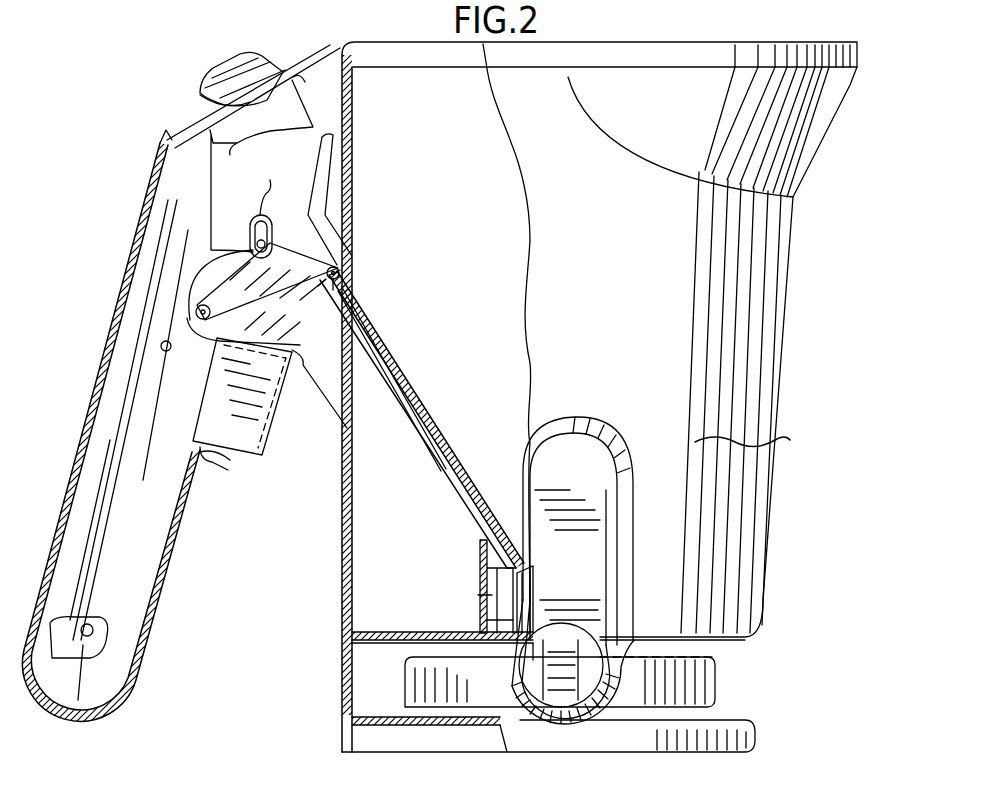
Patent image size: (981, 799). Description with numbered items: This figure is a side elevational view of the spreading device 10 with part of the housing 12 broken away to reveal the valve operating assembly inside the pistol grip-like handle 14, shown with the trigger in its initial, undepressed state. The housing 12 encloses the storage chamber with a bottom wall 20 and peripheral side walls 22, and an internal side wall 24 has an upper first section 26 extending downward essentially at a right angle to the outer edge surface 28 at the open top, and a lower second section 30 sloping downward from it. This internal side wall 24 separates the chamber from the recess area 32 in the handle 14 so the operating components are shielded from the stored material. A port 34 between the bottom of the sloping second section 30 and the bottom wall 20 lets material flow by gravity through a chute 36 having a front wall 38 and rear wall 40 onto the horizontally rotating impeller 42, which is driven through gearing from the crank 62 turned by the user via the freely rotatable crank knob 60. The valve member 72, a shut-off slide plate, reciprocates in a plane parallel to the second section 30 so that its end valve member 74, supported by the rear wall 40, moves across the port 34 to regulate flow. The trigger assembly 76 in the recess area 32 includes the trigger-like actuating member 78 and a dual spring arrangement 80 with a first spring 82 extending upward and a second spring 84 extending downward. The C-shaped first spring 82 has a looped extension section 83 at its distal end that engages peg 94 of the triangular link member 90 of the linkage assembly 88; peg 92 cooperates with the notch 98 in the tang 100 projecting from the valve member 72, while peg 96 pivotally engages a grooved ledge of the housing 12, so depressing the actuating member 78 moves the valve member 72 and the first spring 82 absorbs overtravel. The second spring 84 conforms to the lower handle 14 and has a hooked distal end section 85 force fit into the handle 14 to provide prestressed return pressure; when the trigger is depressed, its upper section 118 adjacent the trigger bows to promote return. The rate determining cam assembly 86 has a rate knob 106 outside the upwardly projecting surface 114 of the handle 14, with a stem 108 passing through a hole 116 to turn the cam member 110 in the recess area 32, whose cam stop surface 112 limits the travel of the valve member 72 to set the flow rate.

The spreading device 10 is at (296, 668).
The housing 12 is at (790, 364).
The handle 14 is at (105, 420).
The bottom wall 20 is at (535, 562).
The peripheral side walls 22 is at (753, 437).
The internal side wall 24 is at (386, 292).
The first section 26 is at (355, 148).
The outer edge surface 28 is at (354, 40).
The second section 30 is at (390, 367).
The recess area 32 is at (287, 177).
The port 34 is at (512, 535).
The chute 36 is at (482, 596).
The front wall 38 is at (512, 625).
The rear wall 40 is at (477, 577).
The impeller 42 is at (710, 688).
The crank knob 60 is at (535, 706).
The crank 62 is at (567, 440).
The valve member 72 is at (388, 367).
The end valve member 74 is at (478, 550).
The trigger assembly 76 is at (248, 478).
The actuating member 78 is at (262, 372).
The dual spring arrangement 80 is at (198, 345).
The first spring 82 is at (198, 270).
The looped extension section 83 is at (253, 197).
The second spring 84 is at (165, 550).
The hooked distal end section 85 is at (88, 658).
The rate determining cam assembly 86 is at (224, 66).
The linkage assembly 88 is at (288, 248).
The triangular link member 90 is at (267, 281).
The peg 92 is at (336, 288).
The peg 94 is at (255, 241).
The peg 96 is at (196, 310).
The notch 98 is at (318, 286).
The tang 100 is at (342, 268).
The rate knob 106 is at (263, 58).
The stem 108 is at (205, 102).
The cam member 110 is at (230, 191).
The cam stop surface 112 is at (315, 127).
The upwardly projecting surface 114 is at (182, 133).
The hole 116 is at (268, 68).
The upper section 118 is at (222, 485).